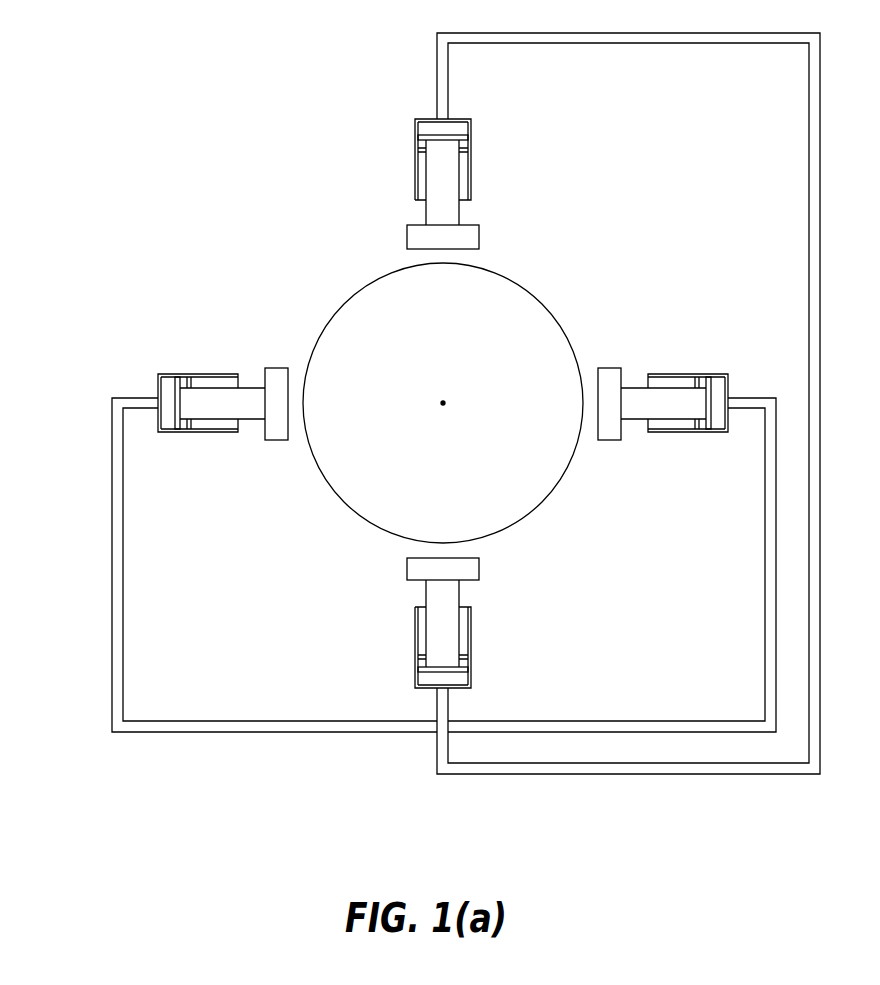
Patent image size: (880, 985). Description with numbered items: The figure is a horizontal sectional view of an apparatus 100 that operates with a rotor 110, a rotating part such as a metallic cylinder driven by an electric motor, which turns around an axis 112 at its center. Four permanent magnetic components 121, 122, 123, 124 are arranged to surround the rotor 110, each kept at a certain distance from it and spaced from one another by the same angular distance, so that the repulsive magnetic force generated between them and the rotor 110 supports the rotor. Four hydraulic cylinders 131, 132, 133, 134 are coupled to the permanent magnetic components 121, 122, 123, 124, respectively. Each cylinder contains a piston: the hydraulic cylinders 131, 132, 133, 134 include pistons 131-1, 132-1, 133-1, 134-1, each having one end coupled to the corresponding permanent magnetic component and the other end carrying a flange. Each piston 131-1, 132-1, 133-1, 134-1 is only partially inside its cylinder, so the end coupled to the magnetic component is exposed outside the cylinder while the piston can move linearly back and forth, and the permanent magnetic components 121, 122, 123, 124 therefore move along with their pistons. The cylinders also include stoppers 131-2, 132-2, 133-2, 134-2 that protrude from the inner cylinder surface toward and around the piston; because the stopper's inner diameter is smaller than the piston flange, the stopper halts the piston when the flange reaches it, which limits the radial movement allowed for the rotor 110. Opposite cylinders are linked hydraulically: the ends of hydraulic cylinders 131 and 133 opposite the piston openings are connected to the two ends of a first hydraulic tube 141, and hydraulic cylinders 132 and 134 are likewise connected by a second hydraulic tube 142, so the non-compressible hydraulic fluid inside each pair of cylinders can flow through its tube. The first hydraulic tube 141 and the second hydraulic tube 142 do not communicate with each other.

The apparatus 100 is at (148, 53).
The rotor 110 is at (543, 307).
The axis 112 is at (444, 404).
The permanent magnetic component 121 is at (407, 569).
The permanent magnetic component 122 is at (612, 440).
The permanent magnetic component 123 is at (479, 238).
The permanent magnetic component 124 is at (277, 440).
The hydraulic cylinder 131 is at (494, 644).
The piston 131-1 is at (452, 673).
The stopper 131-2 is at (420, 655).
The hydraulic cylinder 132 is at (688, 372).
The piston 132-1 is at (712, 393).
The stopper 132-2 is at (696, 427).
The hydraulic cylinder 133 is at (392, 153).
The piston 133-1 is at (435, 135).
The stopper 133-2 is at (463, 155).
The hydraulic cylinder 134 is at (161, 372).
The piston 134-1 is at (173, 411).
The stopper 134-2 is at (172, 375).
The first hydraulic tube 141 is at (600, 774).
The second hydraulic tube 142 is at (112, 605).